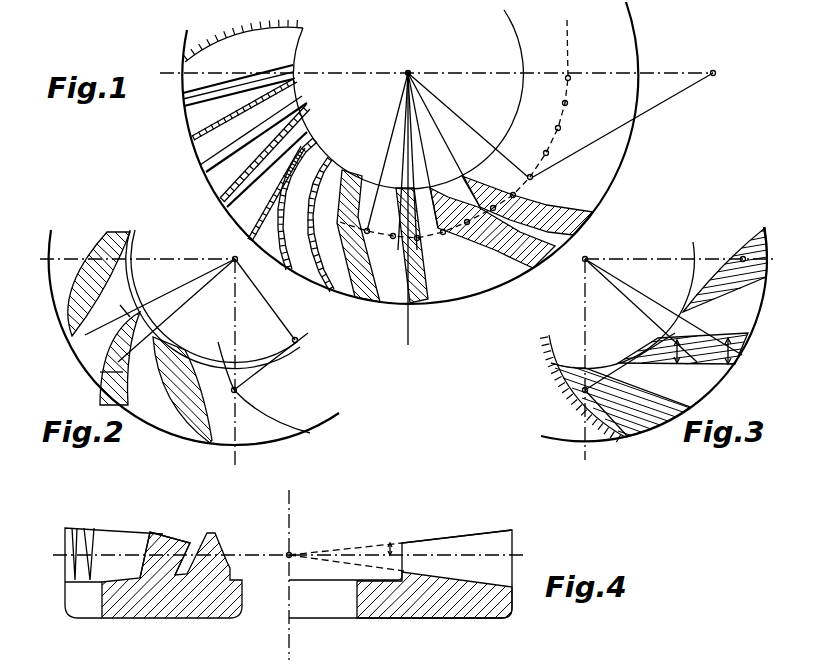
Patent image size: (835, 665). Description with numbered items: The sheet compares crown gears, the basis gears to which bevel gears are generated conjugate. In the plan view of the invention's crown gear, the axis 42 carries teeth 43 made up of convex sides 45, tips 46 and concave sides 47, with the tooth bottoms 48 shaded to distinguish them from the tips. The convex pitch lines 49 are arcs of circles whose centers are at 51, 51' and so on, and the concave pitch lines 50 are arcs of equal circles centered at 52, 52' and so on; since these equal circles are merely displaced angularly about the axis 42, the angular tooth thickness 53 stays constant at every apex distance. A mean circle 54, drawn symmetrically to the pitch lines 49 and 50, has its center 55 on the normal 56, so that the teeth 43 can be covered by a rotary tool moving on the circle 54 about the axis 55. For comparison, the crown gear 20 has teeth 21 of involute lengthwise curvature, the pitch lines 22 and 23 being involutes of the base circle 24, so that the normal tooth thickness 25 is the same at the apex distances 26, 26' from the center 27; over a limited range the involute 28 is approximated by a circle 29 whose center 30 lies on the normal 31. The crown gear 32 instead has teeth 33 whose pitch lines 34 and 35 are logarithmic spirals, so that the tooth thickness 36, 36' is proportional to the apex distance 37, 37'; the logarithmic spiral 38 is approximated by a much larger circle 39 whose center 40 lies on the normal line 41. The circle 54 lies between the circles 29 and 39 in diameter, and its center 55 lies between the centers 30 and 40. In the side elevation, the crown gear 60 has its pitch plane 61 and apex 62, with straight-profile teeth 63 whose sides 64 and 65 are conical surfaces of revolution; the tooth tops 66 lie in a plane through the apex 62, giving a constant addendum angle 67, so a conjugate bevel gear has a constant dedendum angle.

In FIG. 2, the crown gear 20 is at (258, 437).
In FIG. 2, the teeth 21 is at (200, 440).
In FIG. 2, the pitch line 22 is at (60, 281).
In FIG. 2, the pitch line 23 is at (72, 338).
In FIG. 2, the base circle 24 is at (176, 342).
In FIG. 2, the normal tooth thickness 25 is at (123, 306).
In FIG. 2, the distance from gear apex 26 is at (213, 299).
In FIG. 2, the distance from gear apex 26' is at (176, 310).
In FIG. 2, the gear apex or center 27 is at (238, 261).
In FIG. 2, the involute 28 is at (276, 424).
In FIG. 2, the circle 29 is at (284, 418).
In FIG. 2, the center 30 is at (298, 340).
In FIG. 2, the normal 31 is at (250, 377).
In FIG. 3, the crown gear 32 is at (750, 310).
In FIG. 3, the teeth 33 is at (693, 405).
In FIG. 3, the pitch line 34 is at (718, 374).
In FIG. 3, the pitch line 35 is at (712, 338).
In FIG. 3, the tooth thickness 36 is at (657, 365).
In FIG. 3, the tooth thickness 36' is at (750, 352).
In FIG. 3, the apex distance 37 is at (680, 359).
In FIG. 3, the apex distance 37' is at (663, 307).
In FIG. 3, the logarithmic spiral 38 is at (619, 440).
In FIG. 3, the circle 39 is at (652, 445).
In FIG. 3, the center 40 is at (743, 256).
In FIG. 3, the normal line 41 is at (640, 343).
In FIG. 1, the axis of the crown gear 42 is at (412, 72).
In FIG. 1, the teeth 43 is at (378, 304).
In FIG. 1, the convex sides 45 is at (200, 153).
In FIG. 1, the tips 46 is at (212, 177).
In FIG. 1, the concave sides 47 is at (222, 197).
In FIG. 1, the tooth bottoms 48 is at (238, 214).
In FIG. 1, the convex pitch lines 49 is at (252, 230).
In FIG. 1, the concave pitch lines 50 is at (342, 300).
In FIG. 1, the center 51 is at (517, 203).
In FIG. 1, the center 51' is at (562, 144).
In FIG. 1, the center 52 is at (454, 130).
In FIG. 1, the center 52' is at (547, 115).
In FIG. 1, the angular tooth thickness 53 is at (447, 174).
In FIG. 1, the mean circle 54 is at (512, 316).
In FIG. 1, the center 55 is at (520, 184).
In FIG. 1, the normal 56 is at (628, 126).
In FIG. 4, the crown gear 60 is at (335, 612).
In FIG. 4, the pitch plane 61 is at (503, 555).
In FIG. 4, the center or apex 62 is at (292, 553).
In FIG. 4, the teeth 63 is at (160, 533).
In FIG. 4, the tooth side 64 is at (145, 542).
In FIG. 4, the tooth side 65 is at (172, 540).
In FIG. 4, the tops of the crown gear teeth 66 is at (493, 532).
In FIG. 4, the addendum angle 67 is at (392, 545).